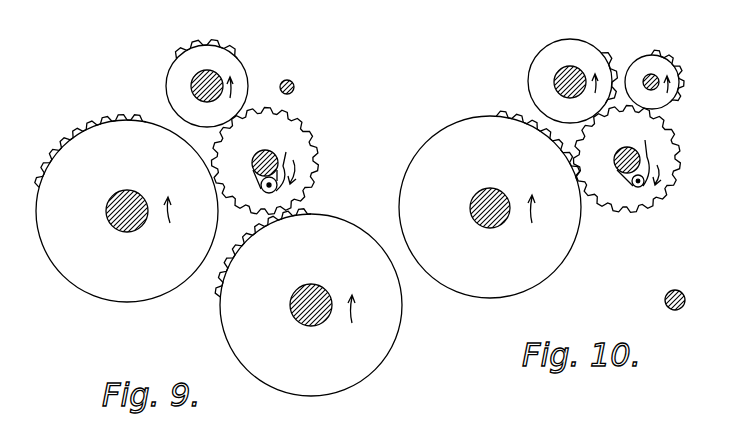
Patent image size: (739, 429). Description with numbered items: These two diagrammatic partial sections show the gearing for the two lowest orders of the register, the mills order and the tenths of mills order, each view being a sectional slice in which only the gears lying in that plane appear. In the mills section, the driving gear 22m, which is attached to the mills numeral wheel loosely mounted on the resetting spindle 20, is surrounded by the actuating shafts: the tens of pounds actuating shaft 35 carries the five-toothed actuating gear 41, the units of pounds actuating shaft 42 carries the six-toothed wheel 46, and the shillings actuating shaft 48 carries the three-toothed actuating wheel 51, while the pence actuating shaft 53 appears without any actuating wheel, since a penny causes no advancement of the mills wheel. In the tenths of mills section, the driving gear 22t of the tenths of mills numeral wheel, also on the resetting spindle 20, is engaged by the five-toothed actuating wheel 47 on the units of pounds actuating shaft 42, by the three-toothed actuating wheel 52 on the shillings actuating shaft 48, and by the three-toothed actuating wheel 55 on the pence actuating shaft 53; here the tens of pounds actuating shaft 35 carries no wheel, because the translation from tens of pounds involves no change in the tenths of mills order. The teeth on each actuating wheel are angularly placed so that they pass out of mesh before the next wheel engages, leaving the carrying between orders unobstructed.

In FIG. 9, the resetting spindle 20 is at (277, 158).
In FIG. 10, the resetting spindle 20 is at (643, 148).
In FIG. 9, the driving gear of the mills numeral wheel 22m is at (313, 177).
In FIG. 10, the driving gear of the tenths of mills numeral wheel 22t is at (640, 200).
In FIG. 9, the tens of pounds actuating shaft 35 is at (307, 325).
In FIG. 10, the tens of pounds actuating shaft 35 is at (682, 290).
In FIG. 9, the actuating gear 41 is at (398, 317).
In FIG. 9, the units of pounds actuating shaft 42 is at (118, 226).
In FIG. 10, the units of pounds actuating shaft 42 is at (478, 222).
In FIG. 9, the six-toothed wheel 46 is at (145, 297).
In FIG. 10, the five-toothed actuating wheel 47 is at (570, 243).
In FIG. 9, the shillings actuating shaft 48 is at (223, 77).
In FIG. 10, the shillings actuating shaft 48 is at (565, 70).
In FIG. 9, the three-toothed actuating wheel 51 is at (240, 77).
In FIG. 10, the three-toothed actuating wheel 52 is at (535, 76).
In FIG. 9, the pence actuating shaft 53 is at (295, 87).
In FIG. 10, the pence actuating shaft 53 is at (655, 90).
In FIG. 10, the three-toothed actuating wheel 55 is at (662, 62).